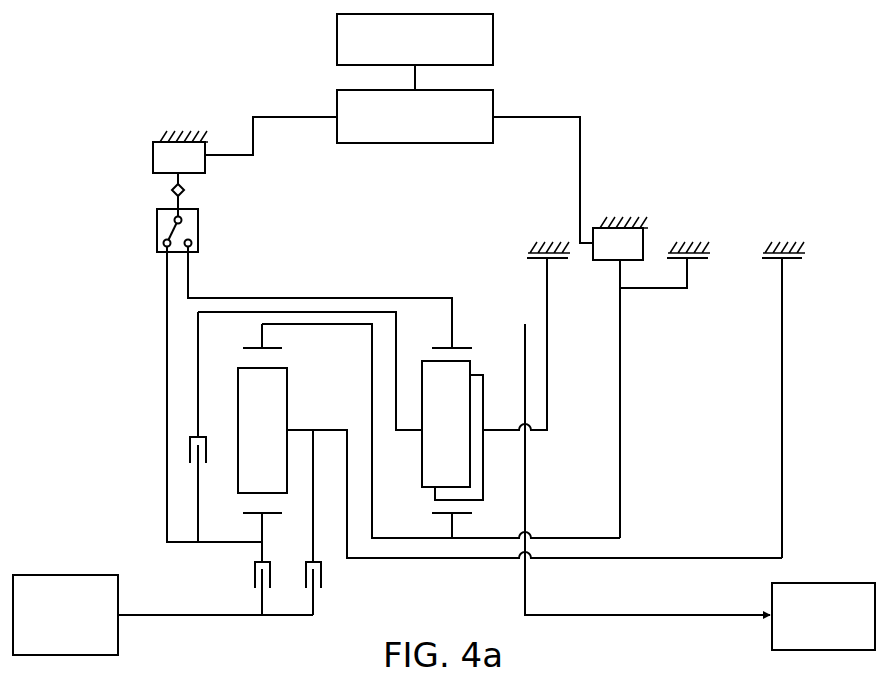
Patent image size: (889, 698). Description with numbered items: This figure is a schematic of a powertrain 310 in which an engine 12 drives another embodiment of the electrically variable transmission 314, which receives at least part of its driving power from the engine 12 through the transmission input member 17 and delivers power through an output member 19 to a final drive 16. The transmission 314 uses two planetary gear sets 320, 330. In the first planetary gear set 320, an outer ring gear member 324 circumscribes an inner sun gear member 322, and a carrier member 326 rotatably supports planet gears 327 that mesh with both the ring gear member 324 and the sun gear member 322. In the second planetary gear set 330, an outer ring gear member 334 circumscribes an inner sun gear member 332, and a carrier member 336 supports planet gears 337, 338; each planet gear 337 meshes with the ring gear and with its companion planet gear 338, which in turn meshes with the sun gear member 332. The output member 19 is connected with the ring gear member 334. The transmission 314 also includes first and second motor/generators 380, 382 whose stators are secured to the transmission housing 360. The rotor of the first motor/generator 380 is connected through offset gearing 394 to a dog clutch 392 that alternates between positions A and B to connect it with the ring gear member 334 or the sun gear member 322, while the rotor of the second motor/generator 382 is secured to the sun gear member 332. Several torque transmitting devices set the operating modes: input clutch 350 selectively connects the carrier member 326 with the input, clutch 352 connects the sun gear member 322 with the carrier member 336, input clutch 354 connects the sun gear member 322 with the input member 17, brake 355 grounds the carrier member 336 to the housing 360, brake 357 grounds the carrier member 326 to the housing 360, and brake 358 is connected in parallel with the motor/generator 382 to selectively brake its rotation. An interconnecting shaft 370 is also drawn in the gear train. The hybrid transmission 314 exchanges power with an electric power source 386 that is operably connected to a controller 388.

The electric power source 386 is at (337, 42).
The controller 388 is at (337, 106).
The first motor/generator 380 is at (216, 140).
The offset gearing 394 is at (171, 190).
The dog clutch 392 is at (148, 228).
The electrically variable transmission 314 is at (133, 330).
The powertrain 310 is at (100, 378).
The clutch 352 is at (183, 461).
The engine 12 is at (85, 558).
The transmission input member 17 is at (155, 618).
The first planetary gear set 320 is at (252, 516).
The input clutch 354 is at (249, 590).
The input clutch 350 is at (299, 590).
The inner sun gear member 322 is at (278, 516).
The outer ring gear member 324 is at (252, 345).
The shaft 370 is at (347, 324).
The outer ring gear member 334 is at (443, 345).
The carrier member 326 is at (295, 423).
The planet gears 327 is at (262, 430).
The carrier member 336 is at (411, 440).
The planet gears 337 is at (446, 424).
The planet gears 338 is at (486, 491).
The second planetary gear set 330 is at (441, 518).
The inner sun gear member 332 is at (461, 516).
The brake 355 is at (524, 255).
The transmission housing 360 is at (164, 130).
The second motor/generator 382 is at (599, 266).
The brake 358 is at (712, 256).
The brake 357 is at (806, 256).
The final drive 16 is at (808, 570).
The output member 19 is at (728, 618).